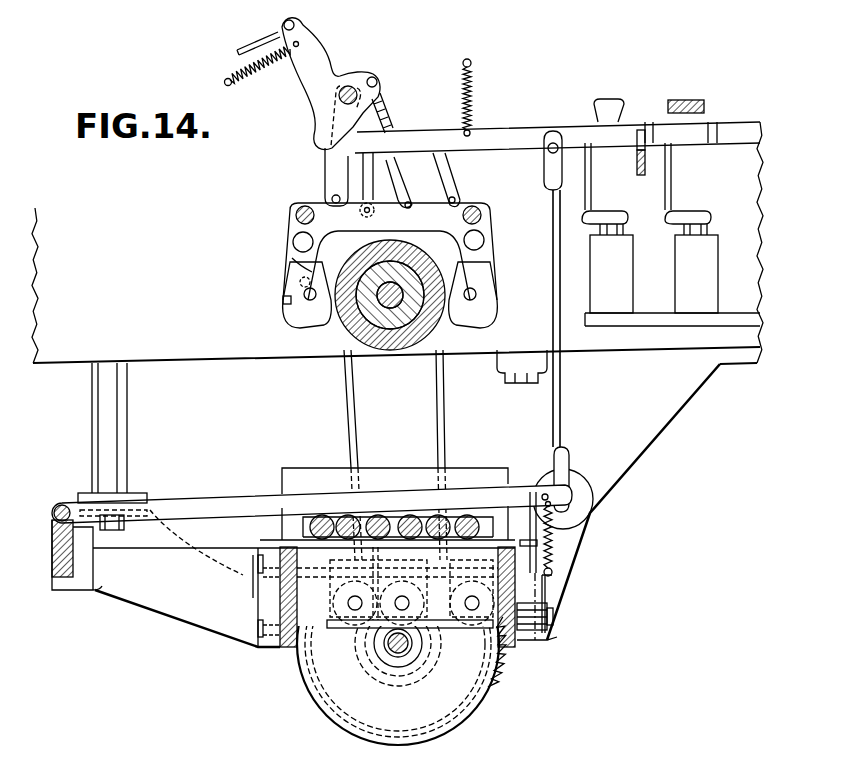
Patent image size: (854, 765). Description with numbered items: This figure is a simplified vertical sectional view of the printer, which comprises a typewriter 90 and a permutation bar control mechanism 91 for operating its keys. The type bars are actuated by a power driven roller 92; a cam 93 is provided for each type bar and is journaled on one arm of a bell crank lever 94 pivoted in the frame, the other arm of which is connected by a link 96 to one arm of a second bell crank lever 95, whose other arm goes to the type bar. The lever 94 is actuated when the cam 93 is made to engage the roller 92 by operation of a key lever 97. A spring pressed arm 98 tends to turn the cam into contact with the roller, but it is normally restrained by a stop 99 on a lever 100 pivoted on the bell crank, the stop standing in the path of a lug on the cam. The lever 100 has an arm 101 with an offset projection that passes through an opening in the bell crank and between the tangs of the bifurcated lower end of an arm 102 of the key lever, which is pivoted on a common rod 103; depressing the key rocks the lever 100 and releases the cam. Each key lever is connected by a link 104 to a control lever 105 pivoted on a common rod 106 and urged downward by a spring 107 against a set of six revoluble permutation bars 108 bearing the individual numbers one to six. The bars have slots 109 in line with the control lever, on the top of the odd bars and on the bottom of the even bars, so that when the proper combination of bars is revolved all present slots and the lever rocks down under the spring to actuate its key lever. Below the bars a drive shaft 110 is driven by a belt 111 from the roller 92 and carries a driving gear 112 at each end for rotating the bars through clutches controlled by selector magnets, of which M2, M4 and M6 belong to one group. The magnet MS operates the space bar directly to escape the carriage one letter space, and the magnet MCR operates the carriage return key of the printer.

The typewriter 90 is at (225, 368).
The permutation bar control mechanism 91 is at (293, 652).
The power driven roller 92 is at (396, 352).
The cam 93 is at (300, 323).
The bell crank lever 94 is at (293, 221).
The bell crank lever 95 is at (331, 57).
The link 96 is at (388, 111).
The key lever 97 is at (521, 124).
The spring pressed arm 98 is at (299, 283).
The stop 99 is at (291, 300).
The lever 100 is at (292, 273).
The arm 101 is at (317, 203).
The arm 102 is at (330, 171).
The common rod 103 is at (352, 88).
The link 104 is at (560, 372).
The control lever 105 is at (198, 498).
The common rod 106 is at (62, 500).
The spring 107 is at (554, 552).
The permutation bars 108 is at (318, 516).
The slots 109 is at (323, 513).
The drive shaft 110 is at (397, 656).
The belt 111 is at (447, 423).
The driving gear 112 is at (491, 673).
The selector magnet M2 is at (358, 628).
The selector magnet M4 is at (437, 622).
The selector magnet M6 is at (478, 628).
The magnet MCR is at (627, 289).
The magnet MS is at (713, 288).